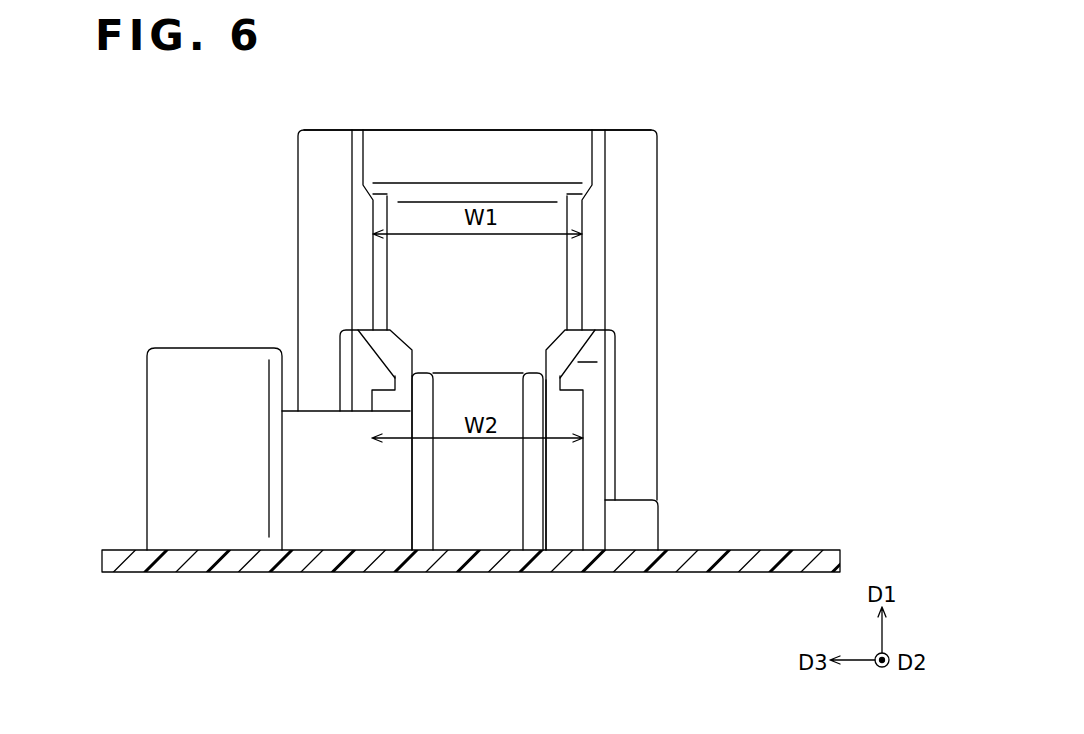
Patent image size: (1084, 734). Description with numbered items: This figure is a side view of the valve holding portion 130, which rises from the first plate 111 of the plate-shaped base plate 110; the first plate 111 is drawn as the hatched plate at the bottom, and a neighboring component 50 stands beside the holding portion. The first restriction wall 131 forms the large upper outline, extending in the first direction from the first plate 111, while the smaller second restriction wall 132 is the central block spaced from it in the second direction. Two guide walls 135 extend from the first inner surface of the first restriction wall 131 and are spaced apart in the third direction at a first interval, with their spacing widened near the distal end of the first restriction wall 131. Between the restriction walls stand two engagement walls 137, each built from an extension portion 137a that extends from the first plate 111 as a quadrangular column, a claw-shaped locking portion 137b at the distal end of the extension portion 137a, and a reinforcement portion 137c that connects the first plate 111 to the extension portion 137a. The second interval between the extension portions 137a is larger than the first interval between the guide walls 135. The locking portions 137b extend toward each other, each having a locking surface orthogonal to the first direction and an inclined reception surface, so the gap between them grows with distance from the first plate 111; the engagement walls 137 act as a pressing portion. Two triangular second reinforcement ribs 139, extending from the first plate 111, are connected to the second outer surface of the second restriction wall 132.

The adjacent component 50 is at (174, 141).
The valve holding portion 130 is at (703, 201).
The first restriction wall 131 is at (474, 130).
The guide walls 135 is at (365, 156).
The engagement walls 137 is at (342, 355).
The extension portion 137a is at (352, 398).
The locking portion 137b is at (386, 357).
The reinforcement portion 137c is at (661, 527).
The second reinforcement ribs 139 is at (410, 515).
The second restriction wall 132 is at (487, 532).
The first plate 111 is at (118, 549).
The base plate 110 is at (466, 520).